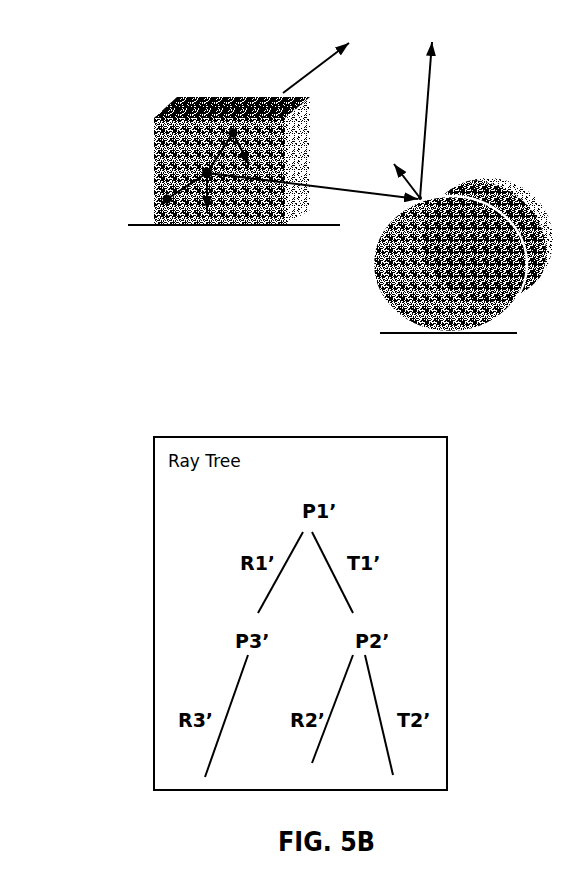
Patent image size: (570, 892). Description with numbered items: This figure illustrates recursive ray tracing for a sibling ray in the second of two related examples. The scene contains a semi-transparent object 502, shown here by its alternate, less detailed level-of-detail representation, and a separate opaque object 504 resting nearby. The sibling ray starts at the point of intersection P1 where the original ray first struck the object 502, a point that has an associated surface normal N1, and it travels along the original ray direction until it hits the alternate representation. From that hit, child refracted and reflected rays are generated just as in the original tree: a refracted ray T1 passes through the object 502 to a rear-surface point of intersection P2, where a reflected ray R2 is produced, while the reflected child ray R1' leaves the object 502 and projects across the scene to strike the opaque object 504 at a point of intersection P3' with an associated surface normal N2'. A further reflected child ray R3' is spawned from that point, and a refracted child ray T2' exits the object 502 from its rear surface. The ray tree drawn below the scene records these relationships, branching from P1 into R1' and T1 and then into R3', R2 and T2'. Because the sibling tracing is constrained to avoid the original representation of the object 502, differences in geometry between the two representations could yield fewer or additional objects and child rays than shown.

The semi-transparent object 502 is at (154, 144).
The opaque object 504 is at (397, 308).
The point of intersection P1 is at (170, 187).
The refracted ray T1 is at (208, 153).
The point of intersection P2 is at (220, 118).
The surface normal N1 is at (219, 191).
The reflected ray R2 is at (245, 149).
The child reflected ray R1' is at (312, 203).
The surface normal N2' is at (386, 172).
The child reflected ray R3' is at (447, 120).
The child refracted ray T2' is at (316, 65).
The intersection point P3' is at (430, 214).